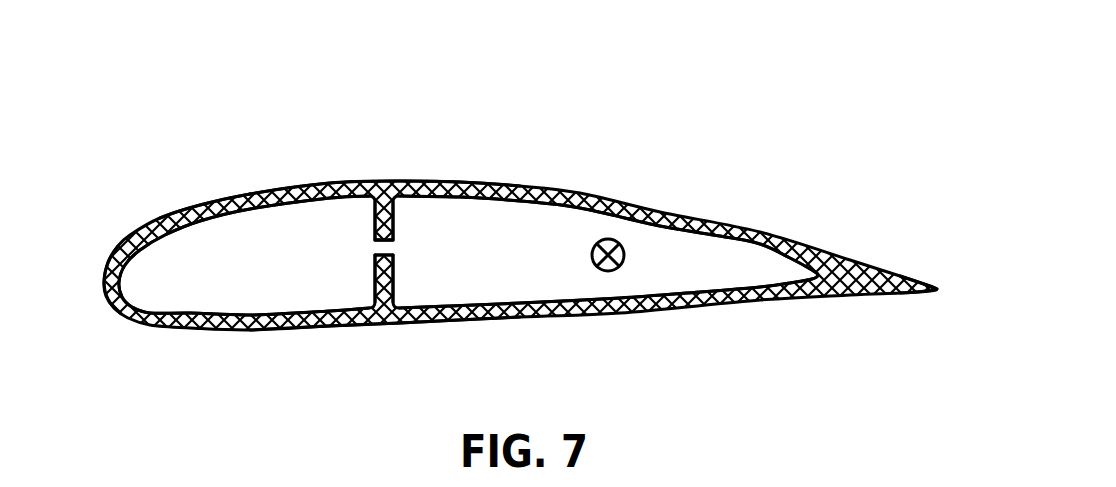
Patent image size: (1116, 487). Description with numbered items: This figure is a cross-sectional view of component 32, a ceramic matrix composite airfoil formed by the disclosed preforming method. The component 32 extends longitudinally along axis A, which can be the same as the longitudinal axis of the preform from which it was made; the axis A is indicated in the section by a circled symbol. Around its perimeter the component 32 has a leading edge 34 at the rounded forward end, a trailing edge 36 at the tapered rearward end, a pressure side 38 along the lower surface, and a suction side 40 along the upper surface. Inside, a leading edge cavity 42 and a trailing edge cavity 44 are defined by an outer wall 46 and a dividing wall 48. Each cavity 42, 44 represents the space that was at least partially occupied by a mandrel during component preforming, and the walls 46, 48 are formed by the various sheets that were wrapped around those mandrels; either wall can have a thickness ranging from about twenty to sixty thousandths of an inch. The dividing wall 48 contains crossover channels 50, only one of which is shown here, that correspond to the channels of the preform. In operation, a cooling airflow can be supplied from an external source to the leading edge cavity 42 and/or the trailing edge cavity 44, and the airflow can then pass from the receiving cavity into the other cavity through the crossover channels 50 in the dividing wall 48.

The component 32 is at (537, 82).
The leading edge 34 is at (104, 282).
The trailing edge 36 is at (940, 288).
The pressure side 38 is at (412, 322).
The suction side 40 is at (334, 182).
The leading edge cavity 42 is at (238, 274).
The trailing edge cavity 44 is at (549, 274).
The outer wall 46 is at (218, 211).
The dividing wall 48 is at (378, 284).
The crossover channel 50 is at (391, 248).
The axis A is at (625, 255).